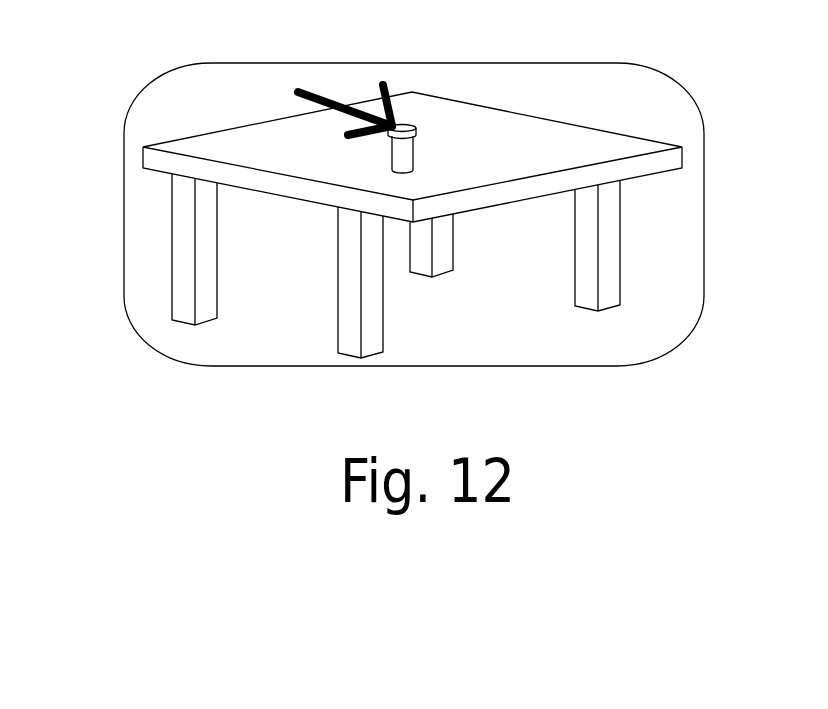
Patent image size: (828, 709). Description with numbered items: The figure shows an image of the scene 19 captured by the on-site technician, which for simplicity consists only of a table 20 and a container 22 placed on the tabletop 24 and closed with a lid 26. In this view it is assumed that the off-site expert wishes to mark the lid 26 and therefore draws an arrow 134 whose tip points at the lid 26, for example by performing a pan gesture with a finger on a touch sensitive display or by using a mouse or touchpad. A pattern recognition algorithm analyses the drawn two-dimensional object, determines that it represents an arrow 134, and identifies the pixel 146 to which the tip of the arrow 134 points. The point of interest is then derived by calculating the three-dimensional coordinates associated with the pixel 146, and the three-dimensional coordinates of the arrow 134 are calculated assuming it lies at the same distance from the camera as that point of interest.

The scene 19 is at (301, 302).
The table 20 is at (177, 278).
The container 22 is at (405, 155).
The tabletop 24 is at (555, 143).
The lid 26 is at (412, 128).
The arrow 134 is at (327, 100).
The pixel 146 is at (408, 125).